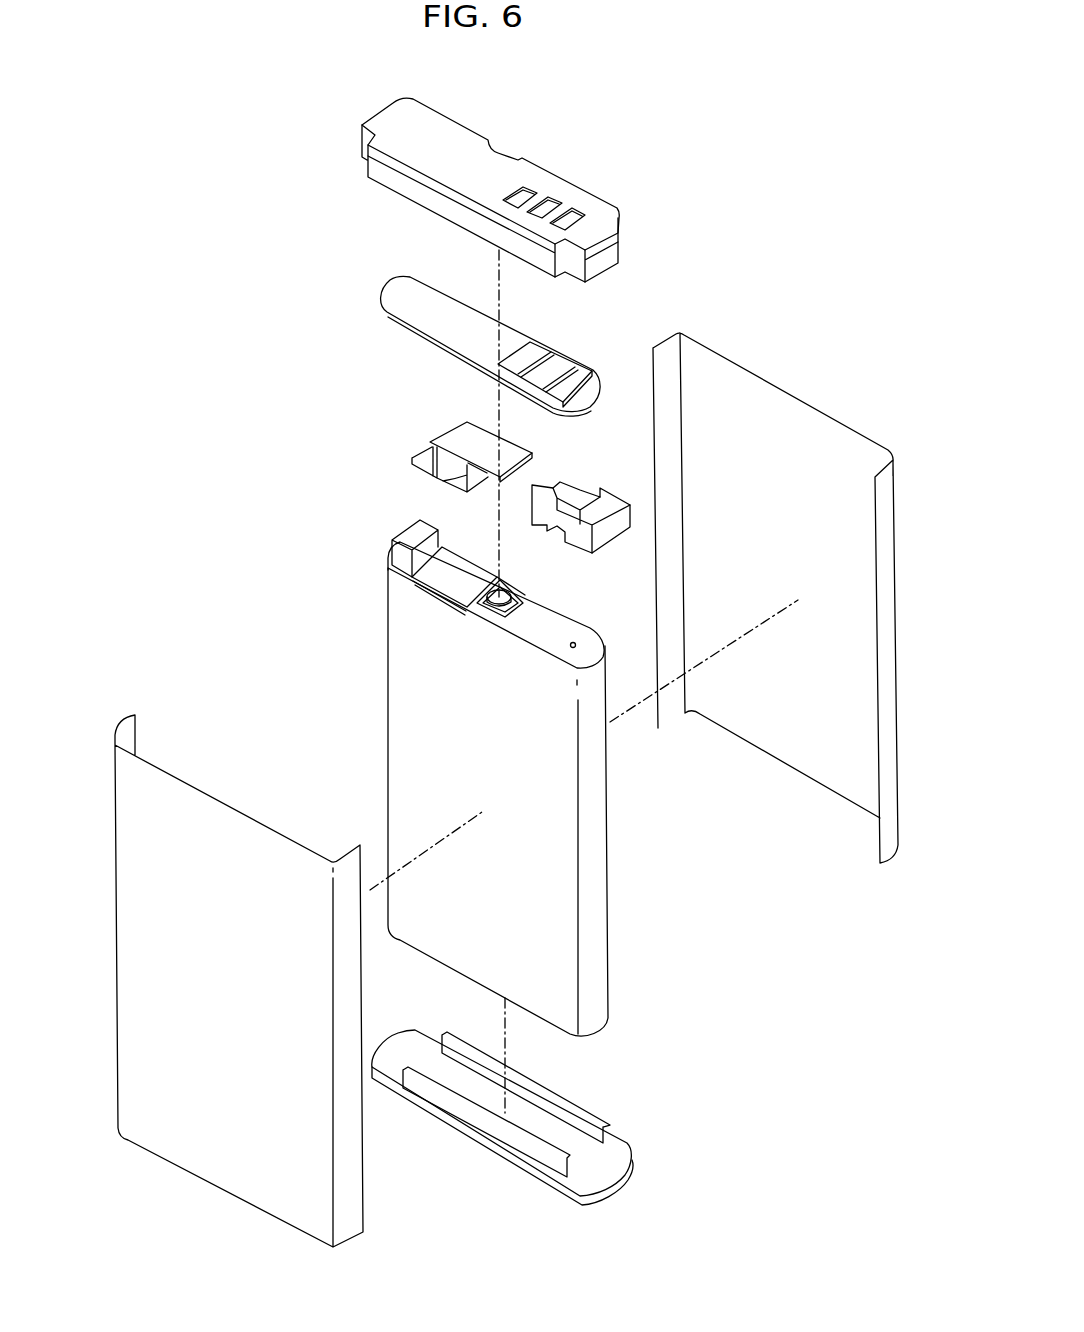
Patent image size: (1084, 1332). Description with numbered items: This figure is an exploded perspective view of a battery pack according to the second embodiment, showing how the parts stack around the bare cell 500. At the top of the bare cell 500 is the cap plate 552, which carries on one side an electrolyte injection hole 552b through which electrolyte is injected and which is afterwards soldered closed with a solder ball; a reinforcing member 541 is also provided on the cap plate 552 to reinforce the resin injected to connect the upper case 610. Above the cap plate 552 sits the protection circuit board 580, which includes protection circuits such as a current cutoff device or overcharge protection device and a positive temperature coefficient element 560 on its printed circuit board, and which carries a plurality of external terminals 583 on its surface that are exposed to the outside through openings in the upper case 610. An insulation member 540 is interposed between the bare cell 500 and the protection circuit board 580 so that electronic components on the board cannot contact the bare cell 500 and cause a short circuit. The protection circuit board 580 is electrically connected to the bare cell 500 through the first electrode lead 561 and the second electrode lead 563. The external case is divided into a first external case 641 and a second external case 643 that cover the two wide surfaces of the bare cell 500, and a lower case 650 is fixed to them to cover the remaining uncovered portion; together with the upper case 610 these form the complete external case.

The bare cell 500 is at (530, 789).
The insulation member 540 is at (432, 577).
The reinforcing member 541 is at (412, 537).
The cap plate 552 is at (550, 620).
The electrolyte injection hole 552b is at (577, 643).
The positive temperature coefficient (PTC) element 560 is at (457, 435).
The first electrode lead 561 is at (440, 479).
The second electrode lead 563 is at (603, 515).
The protection circuit board 580 is at (408, 298).
The external terminals 583 is at (583, 378).
The upper case 610 is at (497, 162).
The first external case 641 is at (198, 802).
The second external case 643 is at (798, 407).
The lower case 650 is at (600, 1163).